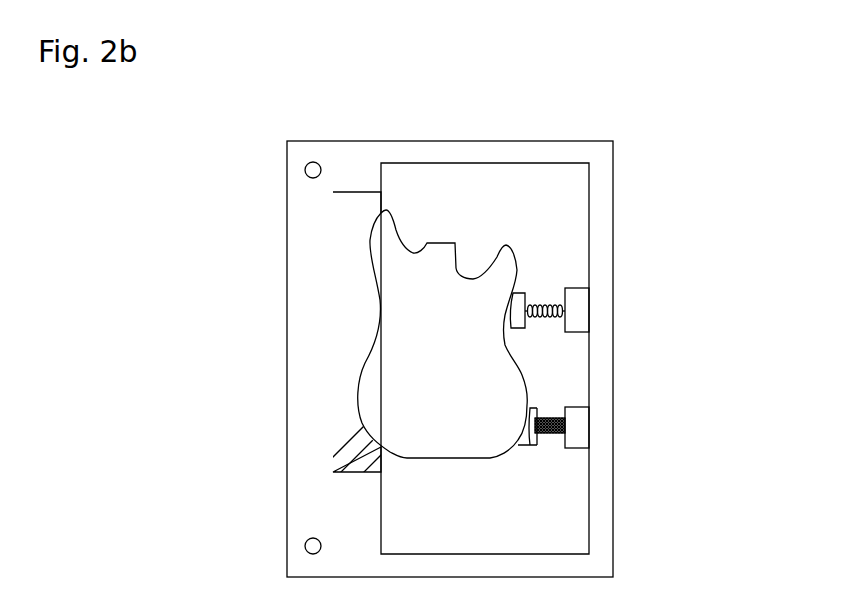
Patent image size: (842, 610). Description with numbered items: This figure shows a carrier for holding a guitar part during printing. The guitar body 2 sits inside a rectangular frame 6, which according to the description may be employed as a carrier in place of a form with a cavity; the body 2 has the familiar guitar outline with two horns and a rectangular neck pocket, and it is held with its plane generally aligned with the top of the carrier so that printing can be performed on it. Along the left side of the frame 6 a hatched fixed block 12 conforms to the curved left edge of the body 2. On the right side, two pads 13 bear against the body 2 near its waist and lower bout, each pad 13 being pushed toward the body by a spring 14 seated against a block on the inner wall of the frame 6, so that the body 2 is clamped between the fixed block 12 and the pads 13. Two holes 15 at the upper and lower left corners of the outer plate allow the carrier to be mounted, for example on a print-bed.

The body 2 is at (447, 369).
The frame 6 is at (432, 152).
The fixed clamping block 12 is at (355, 192).
The clamping pad 13 is at (521, 296).
The spring 14 is at (543, 302).
The mounting hole 15 is at (306, 163).